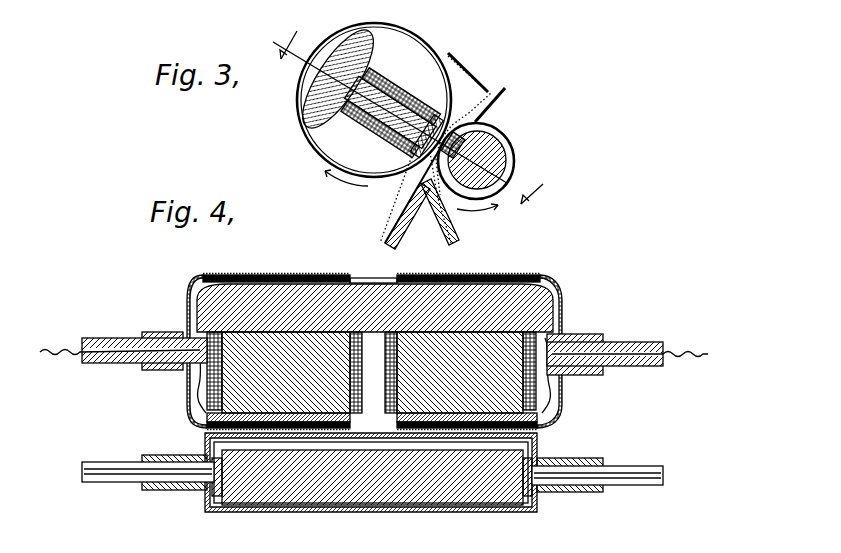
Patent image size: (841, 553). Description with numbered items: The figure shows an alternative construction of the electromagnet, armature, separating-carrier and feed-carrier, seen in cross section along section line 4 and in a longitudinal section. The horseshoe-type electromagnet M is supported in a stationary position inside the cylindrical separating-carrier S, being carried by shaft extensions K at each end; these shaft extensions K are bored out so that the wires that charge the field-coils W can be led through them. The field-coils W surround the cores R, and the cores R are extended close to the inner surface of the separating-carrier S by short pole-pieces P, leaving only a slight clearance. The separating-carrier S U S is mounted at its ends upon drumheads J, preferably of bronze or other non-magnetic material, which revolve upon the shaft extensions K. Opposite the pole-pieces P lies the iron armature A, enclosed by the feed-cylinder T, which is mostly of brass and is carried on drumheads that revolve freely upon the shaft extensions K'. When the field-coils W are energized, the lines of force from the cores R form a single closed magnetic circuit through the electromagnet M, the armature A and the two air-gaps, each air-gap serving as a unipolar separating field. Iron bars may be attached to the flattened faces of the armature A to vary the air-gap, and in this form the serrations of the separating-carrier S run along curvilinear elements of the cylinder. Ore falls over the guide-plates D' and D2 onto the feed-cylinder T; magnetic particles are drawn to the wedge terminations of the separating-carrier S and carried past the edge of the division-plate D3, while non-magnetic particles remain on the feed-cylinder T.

In FIG. 3, the separating-carrier S is at (431, 40).
In FIG. 4, the separating-carrier S is at (259, 275).
In FIG. 3, the electromagnet M is at (320, 103).
In FIG. 4, the electromagnet M is at (316, 292).
In FIG. 3, the field-coils W is at (388, 82).
In FIG. 3, the cores R is at (384, 118).
In FIG. 4, the cores R is at (371, 372).
In FIG. 3, the pole-pieces P is at (440, 110).
In FIG. 4, the pole-pieces P is at (197, 419).
In FIG. 3, the guide-plate D' is at (474, 66).
In FIG. 3, the guide-plate D2 is at (504, 95).
In FIG. 3, the division-plate D3 is at (413, 180).
In FIG. 3, the feed-cylinder T is at (514, 158).
In FIG. 4, the feed-cylinder T is at (470, 512).
In FIG. 3, the armature A is at (495, 137).
In FIG. 4, the armature A is at (372, 477).
In FIG. 4, the shaft extensions K is at (374, 341).
In FIG. 3, the shaft extensions K' is at (475, 184).
In FIG. 4, the shaft extensions K' is at (372, 464).
In FIG. 4, the drumheads J is at (192, 300).
In FIG. 4, the separating-carrier section U is at (378, 278).
In FIG. 3, the section line 4 is at (405, 117).